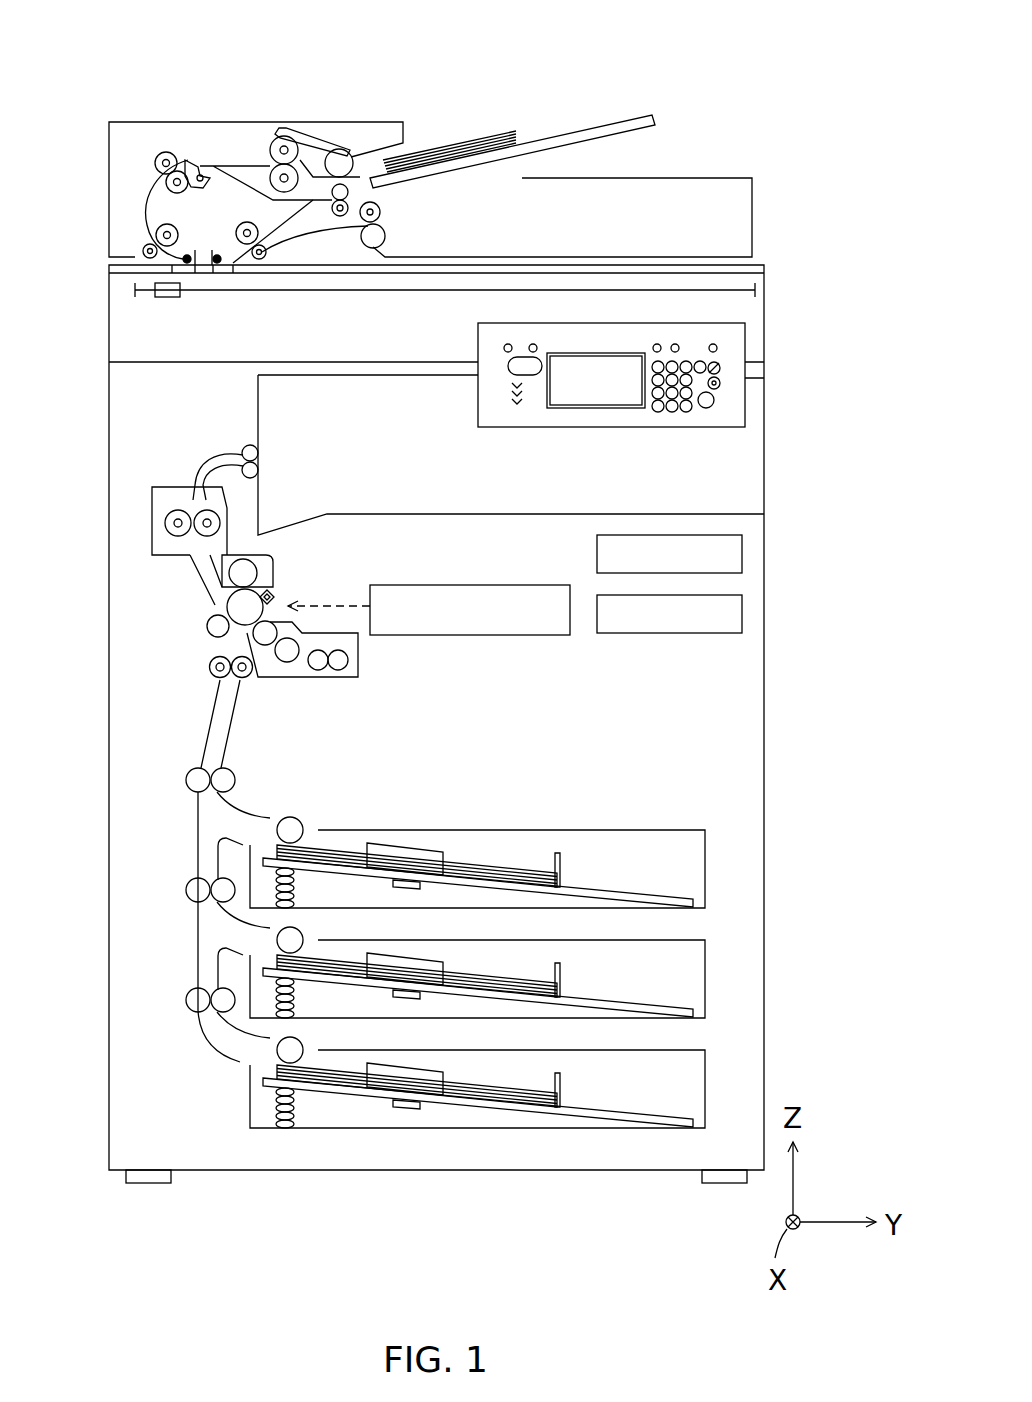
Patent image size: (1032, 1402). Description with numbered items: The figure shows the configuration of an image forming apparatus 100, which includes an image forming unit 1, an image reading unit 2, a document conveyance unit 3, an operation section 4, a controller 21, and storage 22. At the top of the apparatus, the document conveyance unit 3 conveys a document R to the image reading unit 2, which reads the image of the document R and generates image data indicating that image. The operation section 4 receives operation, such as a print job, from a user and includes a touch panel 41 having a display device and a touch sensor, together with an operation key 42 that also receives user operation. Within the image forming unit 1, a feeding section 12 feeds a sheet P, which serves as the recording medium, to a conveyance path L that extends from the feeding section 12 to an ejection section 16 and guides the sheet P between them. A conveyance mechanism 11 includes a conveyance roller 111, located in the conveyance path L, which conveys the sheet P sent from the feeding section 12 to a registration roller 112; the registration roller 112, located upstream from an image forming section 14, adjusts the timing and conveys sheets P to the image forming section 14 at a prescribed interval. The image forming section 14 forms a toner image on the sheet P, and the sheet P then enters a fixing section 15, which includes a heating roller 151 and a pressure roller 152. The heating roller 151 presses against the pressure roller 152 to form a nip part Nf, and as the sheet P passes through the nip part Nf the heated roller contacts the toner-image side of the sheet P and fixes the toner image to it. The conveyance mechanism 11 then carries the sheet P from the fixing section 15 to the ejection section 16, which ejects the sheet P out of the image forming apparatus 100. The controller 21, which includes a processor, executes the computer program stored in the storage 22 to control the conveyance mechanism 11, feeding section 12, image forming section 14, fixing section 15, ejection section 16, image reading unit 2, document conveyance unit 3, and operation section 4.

The image forming apparatus 100 is at (388, 87).
The image forming unit 1 is at (788, 760).
The image reading unit 2 is at (106, 307).
The document conveyance unit 3 is at (675, 158).
The document R is at (498, 132).
The operation section 4 is at (750, 338).
The touch panel 41 is at (622, 351).
The operation key 42 is at (716, 400).
The controller 21 is at (747, 555).
The storage 22 is at (747, 613).
The ejection section 16 is at (259, 452).
The fixing section 15 is at (148, 486).
The nip part Nf is at (190, 507).
The heating roller 151 is at (152, 528).
The pressure roller 152 is at (222, 512).
The image forming section 14 is at (292, 598).
The conveyance mechanism 11 is at (160, 779).
The conveyance roller 111 is at (195, 768).
The registration roller 112 is at (208, 666).
The feeding section 12 is at (300, 806).
The conveyance path L is at (176, 838).
The sheet P is at (535, 863).